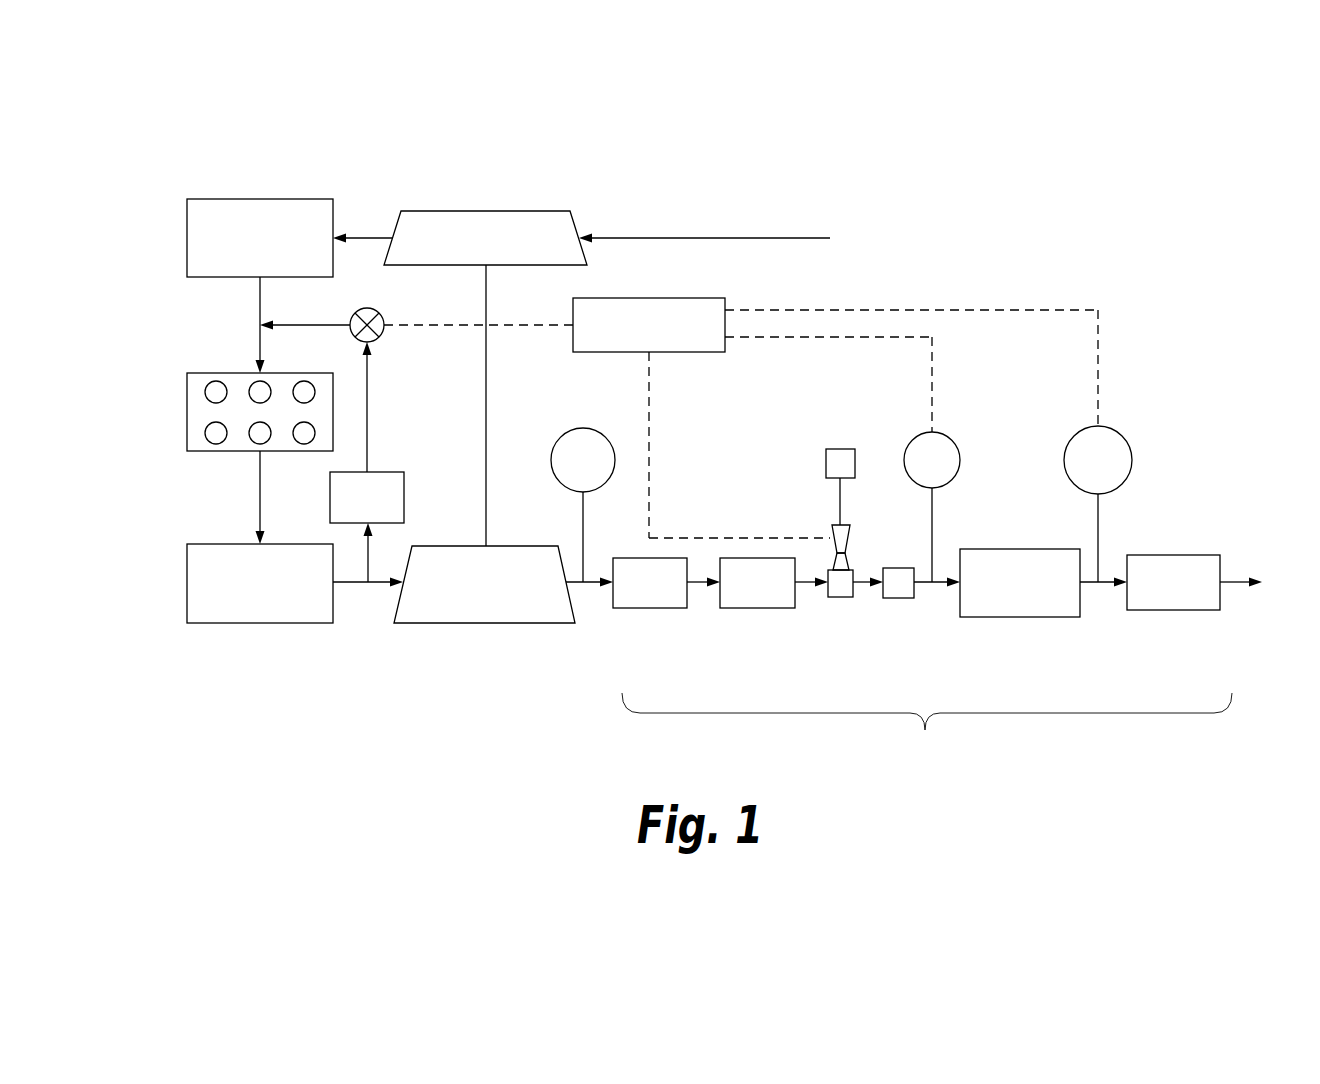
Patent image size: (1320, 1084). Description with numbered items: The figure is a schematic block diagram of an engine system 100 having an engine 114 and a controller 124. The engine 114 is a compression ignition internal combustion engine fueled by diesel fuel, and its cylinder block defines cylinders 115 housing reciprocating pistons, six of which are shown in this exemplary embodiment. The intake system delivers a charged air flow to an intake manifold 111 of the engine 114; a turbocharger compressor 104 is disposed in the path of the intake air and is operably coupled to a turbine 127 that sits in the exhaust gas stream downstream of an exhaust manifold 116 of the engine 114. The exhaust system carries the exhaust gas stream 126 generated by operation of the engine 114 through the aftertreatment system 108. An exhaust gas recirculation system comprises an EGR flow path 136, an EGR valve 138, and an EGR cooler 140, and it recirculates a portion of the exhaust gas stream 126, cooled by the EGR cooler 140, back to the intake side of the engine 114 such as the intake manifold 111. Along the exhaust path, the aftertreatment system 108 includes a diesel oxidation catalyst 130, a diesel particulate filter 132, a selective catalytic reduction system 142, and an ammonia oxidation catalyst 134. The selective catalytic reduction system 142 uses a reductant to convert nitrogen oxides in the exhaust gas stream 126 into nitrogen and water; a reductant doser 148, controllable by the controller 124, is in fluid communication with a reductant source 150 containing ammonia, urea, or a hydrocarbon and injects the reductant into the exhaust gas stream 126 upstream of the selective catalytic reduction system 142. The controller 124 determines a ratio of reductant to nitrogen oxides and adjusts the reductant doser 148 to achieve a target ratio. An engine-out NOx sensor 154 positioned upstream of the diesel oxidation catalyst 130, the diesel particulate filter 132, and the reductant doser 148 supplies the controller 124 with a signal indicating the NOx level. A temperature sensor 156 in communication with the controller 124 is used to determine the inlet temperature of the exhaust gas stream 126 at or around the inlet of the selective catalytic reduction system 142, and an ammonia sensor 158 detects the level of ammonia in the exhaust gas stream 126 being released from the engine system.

The system 100 is at (1040, 195).
The compressor 104 is at (457, 211).
The aftertreatment system 108 is at (927, 729).
The intake manifold 111 is at (218, 199).
The engine 114 is at (210, 373).
The cylinder 115 is at (215, 433).
The exhaust manifold 116 is at (248, 623).
The controller 124 is at (648, 298).
The exhaust gas stream 126 is at (258, 494).
The turbine 127 is at (443, 623).
The diesel oxidation catalyst 130 is at (648, 608).
The diesel particulate filter 132 is at (743, 608).
The ammonia oxidation catalyst 134 is at (1157, 610).
The EGR flow path 136 is at (371, 556).
The EGR valve 138 is at (381, 313).
The EGR cooler 140 is at (393, 472).
The selective catalytic reduction system 142 is at (1008, 617).
The reductant doser 148 is at (832, 530).
The reductant source 150 is at (836, 449).
The engine-out NOx sensor 154 is at (567, 429).
The temperature sensor 156 is at (950, 440).
The ammonia sensor 158 is at (1132, 462).